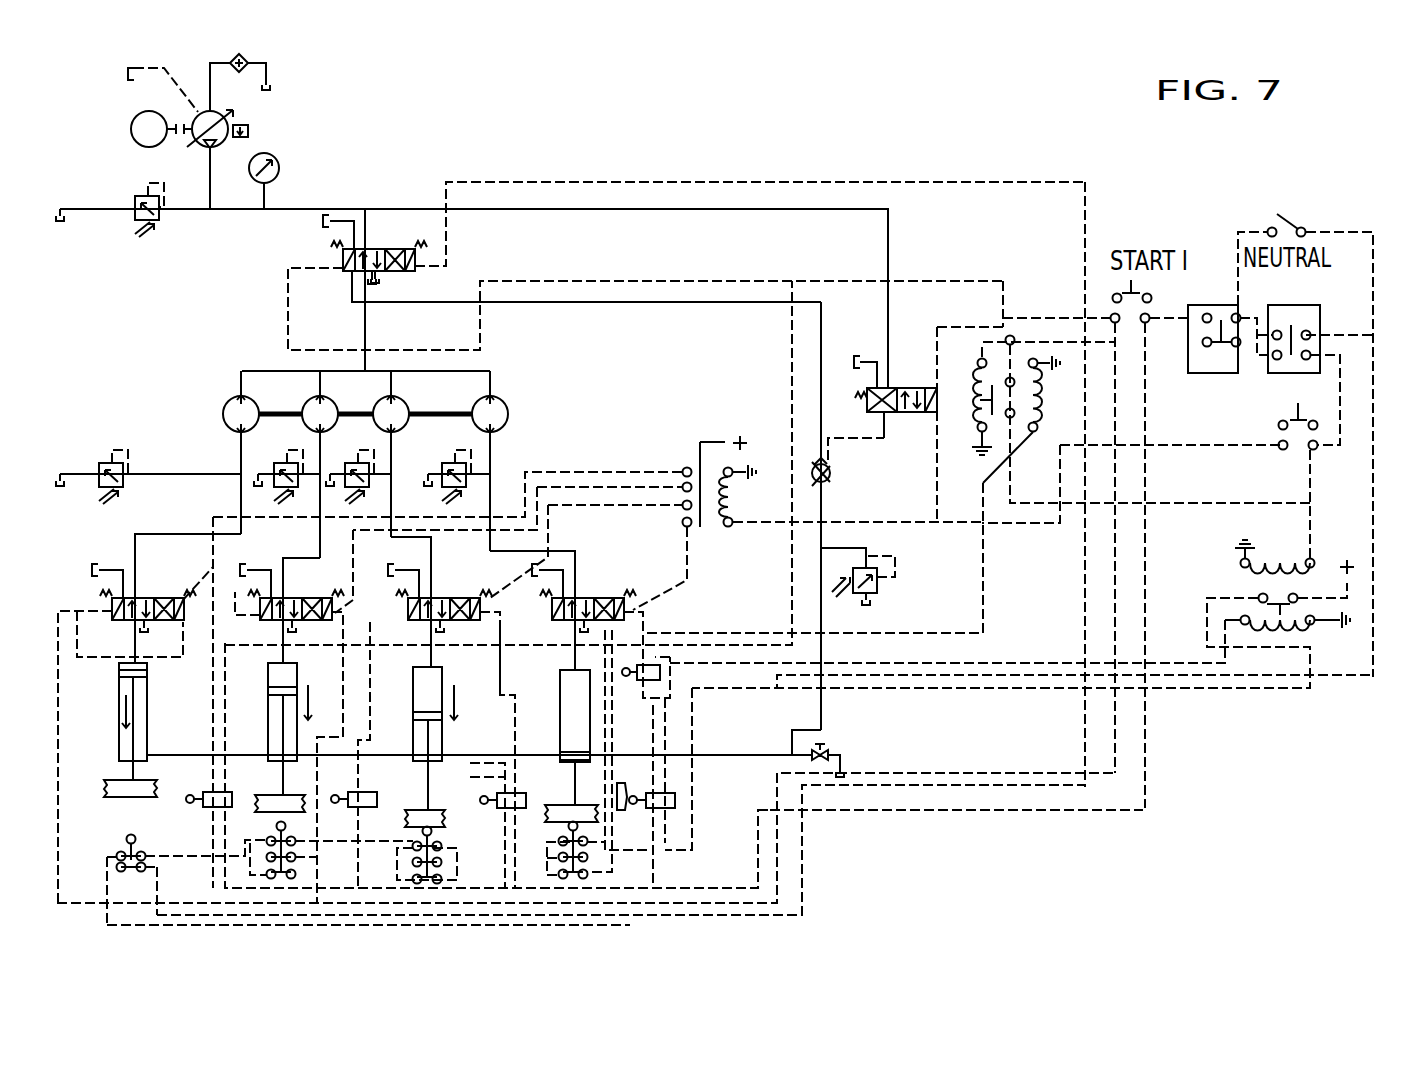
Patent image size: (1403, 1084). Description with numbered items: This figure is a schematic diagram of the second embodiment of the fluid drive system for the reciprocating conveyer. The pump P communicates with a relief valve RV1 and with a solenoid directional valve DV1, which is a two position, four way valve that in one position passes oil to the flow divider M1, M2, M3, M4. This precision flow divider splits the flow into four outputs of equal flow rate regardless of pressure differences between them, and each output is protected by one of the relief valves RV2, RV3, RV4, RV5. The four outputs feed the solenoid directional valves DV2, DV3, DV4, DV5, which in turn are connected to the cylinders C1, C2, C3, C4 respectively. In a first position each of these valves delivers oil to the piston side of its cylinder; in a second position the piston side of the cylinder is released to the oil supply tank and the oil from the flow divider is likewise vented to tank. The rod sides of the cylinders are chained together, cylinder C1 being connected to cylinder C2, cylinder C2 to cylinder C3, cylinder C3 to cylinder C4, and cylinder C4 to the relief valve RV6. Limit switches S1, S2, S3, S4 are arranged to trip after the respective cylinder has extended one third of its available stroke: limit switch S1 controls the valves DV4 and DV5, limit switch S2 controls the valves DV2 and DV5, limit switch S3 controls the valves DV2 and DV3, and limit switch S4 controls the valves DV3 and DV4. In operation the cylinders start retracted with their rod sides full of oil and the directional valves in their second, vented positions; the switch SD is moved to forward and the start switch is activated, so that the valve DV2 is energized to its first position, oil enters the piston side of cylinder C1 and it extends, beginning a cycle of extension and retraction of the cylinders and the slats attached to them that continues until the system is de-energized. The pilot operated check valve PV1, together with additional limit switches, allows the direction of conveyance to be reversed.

The pump P is at (248, 130).
The relief valve RV1 is at (134, 226).
The solenoid directional valve DV1 is at (343, 258).
The flow divider M1 is at (223, 414).
The flow divider M2 is at (304, 405).
The flow divider M3 is at (376, 405).
The flow divider M4 is at (508, 414).
The relief valve RV2 is at (125, 483).
The relief valve RV3 is at (275, 466).
The relief valve RV4 is at (345, 486).
The relief valve RV5 is at (456, 462).
The relief valve RV6 is at (877, 593).
The solenoid directional valve DV2 is at (112, 605).
The solenoid directional valve DV3 is at (277, 576).
The solenoid directional valve DV4 is at (418, 576).
The solenoid directional valve DV5 is at (592, 598).
The pilot operated check valve PV1 is at (830, 470).
The cylinder C1 is at (120, 688).
The cylinder C2 is at (271, 693).
The cylinder C3 is at (415, 698).
The cylinder C4 is at (561, 698).
The limit switch S1 is at (203, 805).
The limit switch S2 is at (377, 798).
The limit switch S3 is at (523, 800).
The limit switch S4 is at (670, 807).
The switch SD is at (1320, 318).